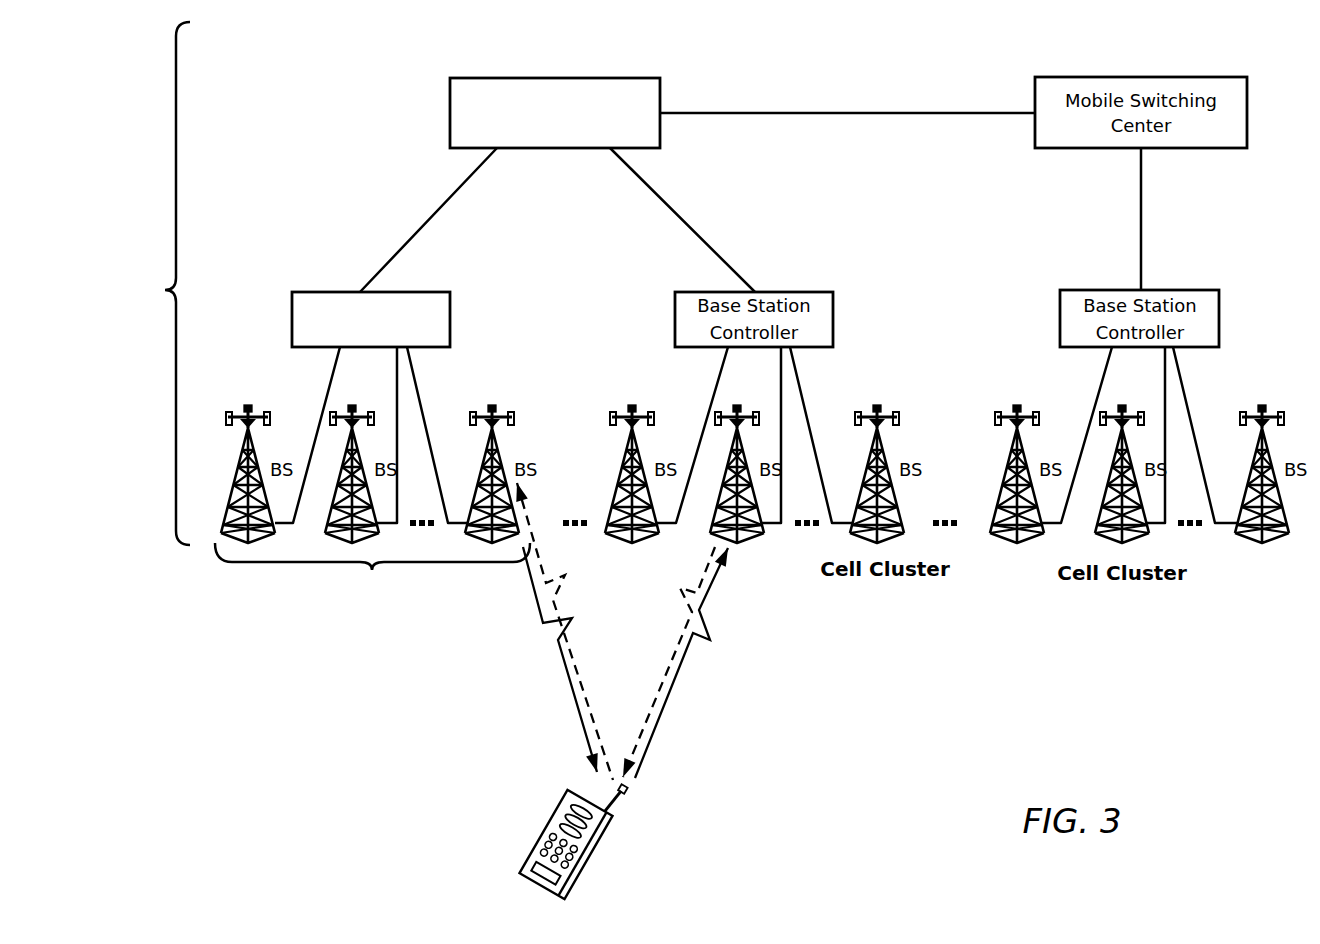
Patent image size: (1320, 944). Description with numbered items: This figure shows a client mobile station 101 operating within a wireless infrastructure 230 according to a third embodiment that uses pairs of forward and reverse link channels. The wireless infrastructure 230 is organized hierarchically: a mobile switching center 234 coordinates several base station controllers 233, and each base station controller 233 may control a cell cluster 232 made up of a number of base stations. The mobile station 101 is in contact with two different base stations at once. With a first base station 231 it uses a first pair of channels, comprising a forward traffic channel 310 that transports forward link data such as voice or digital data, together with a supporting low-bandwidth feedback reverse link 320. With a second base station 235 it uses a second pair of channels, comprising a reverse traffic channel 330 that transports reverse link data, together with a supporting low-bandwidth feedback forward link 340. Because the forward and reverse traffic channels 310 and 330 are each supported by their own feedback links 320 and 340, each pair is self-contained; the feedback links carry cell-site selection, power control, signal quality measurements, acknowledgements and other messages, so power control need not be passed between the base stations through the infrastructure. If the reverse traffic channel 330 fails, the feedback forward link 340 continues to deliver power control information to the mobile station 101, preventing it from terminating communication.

The wireless infrastructure 230 is at (144, 283).
The mobile switching center 234 is at (497, 78).
The base station controller 233 is at (318, 292).
The first base station 231 is at (491, 403).
The second base station 235 is at (715, 418).
The cell cluster 232 is at (372, 584).
The forward traffic channel 310 is at (577, 688).
The low-bandwidth feedback reverse link 320 is at (563, 630).
The reverse traffic channel 330 is at (662, 703).
The low-bandwidth feedback forward link 340 is at (672, 658).
The client mobile station 101 is at (607, 832).